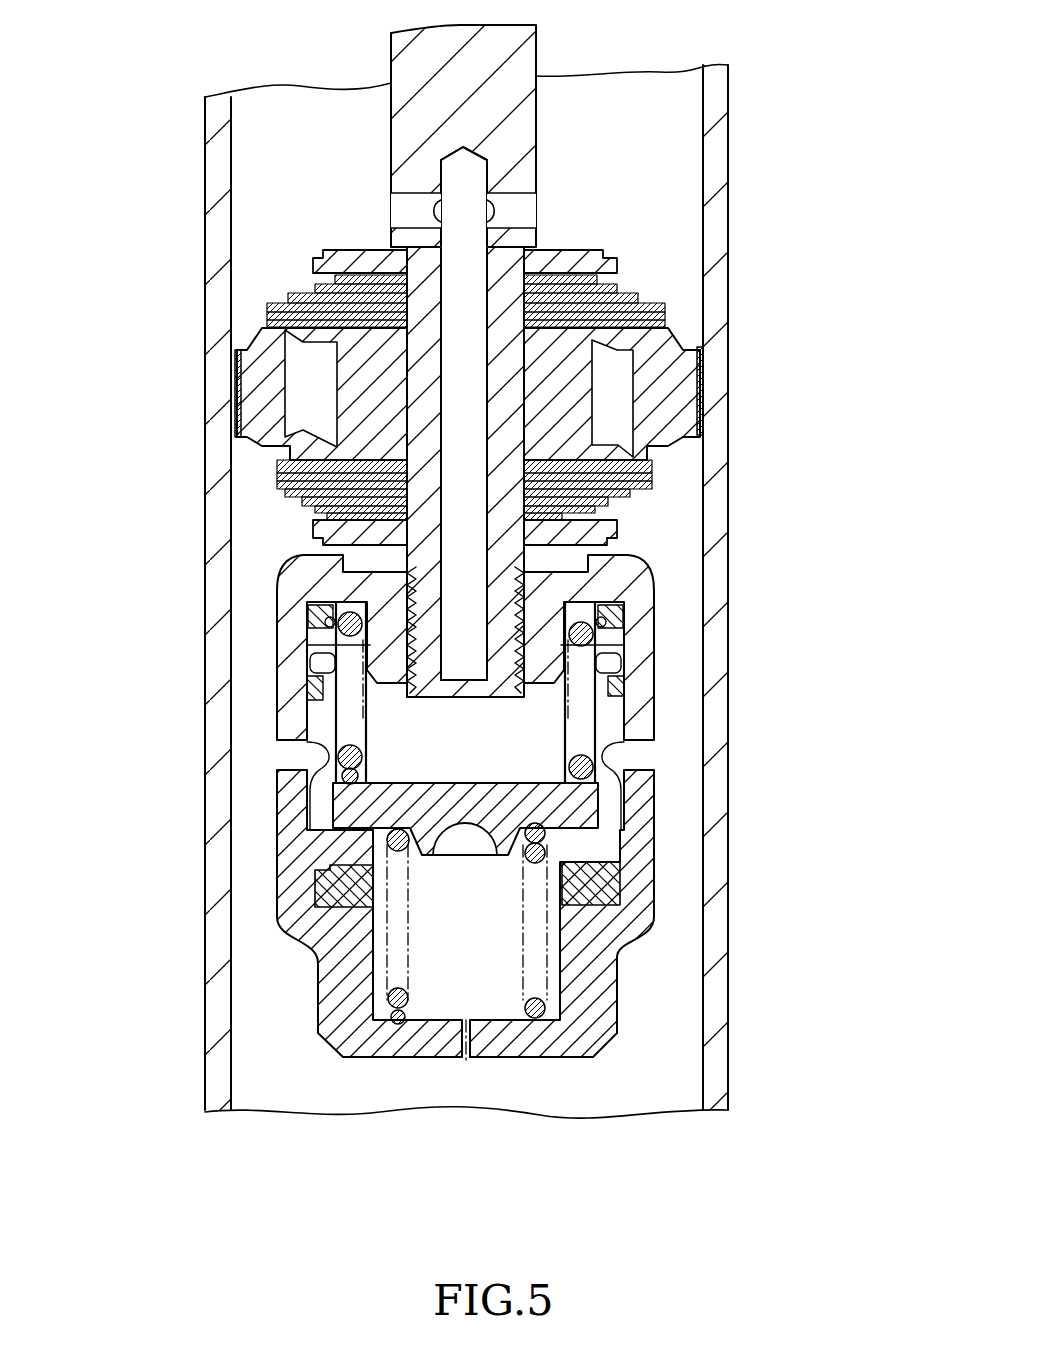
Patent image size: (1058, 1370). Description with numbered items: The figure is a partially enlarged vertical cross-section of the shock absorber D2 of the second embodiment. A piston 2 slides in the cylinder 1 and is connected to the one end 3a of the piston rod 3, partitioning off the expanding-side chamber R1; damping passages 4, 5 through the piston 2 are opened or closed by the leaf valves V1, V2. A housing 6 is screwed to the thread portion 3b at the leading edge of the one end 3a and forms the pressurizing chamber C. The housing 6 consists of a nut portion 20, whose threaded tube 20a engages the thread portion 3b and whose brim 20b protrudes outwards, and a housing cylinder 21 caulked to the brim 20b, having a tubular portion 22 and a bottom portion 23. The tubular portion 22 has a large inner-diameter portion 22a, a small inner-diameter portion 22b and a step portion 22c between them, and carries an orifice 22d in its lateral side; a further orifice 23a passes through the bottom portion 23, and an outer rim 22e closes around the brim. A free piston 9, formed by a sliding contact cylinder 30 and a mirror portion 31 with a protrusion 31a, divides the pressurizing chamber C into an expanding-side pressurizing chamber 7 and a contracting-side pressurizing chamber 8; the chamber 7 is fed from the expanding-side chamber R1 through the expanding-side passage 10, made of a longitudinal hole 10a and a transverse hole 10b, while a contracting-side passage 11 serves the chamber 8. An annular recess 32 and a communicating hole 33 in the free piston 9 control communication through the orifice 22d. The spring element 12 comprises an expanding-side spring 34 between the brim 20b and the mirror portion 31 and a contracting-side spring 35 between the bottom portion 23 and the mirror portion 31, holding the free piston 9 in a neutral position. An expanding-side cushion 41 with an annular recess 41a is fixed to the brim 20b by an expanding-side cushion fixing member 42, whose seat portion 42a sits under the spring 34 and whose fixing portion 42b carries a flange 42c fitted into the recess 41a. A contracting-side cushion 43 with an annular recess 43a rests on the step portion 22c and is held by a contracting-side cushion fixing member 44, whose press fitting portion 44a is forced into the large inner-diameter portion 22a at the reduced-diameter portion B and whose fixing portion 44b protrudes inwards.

The shock absorber D2 is at (200, 88).
The cylinder 1 is at (215, 190).
The piston 2 is at (705, 356).
The piston rod 3 is at (538, 62).
The one end 3a is at (300, 346).
The thread portion 3b is at (560, 545).
The damping passage 4 is at (625, 350).
The damping passage 5 is at (300, 385).
The housing 6 is at (308, 982).
The expanding-side pressurizing chamber 7 is at (305, 745).
The contracting-side pressurizing chamber 8 is at (307, 950).
The free piston 9 is at (655, 710).
The expanding-side passage 10 is at (495, 415).
The longitudinal hole 10a is at (470, 378).
The transverse hole 10b is at (520, 207).
The contracting-side passage 11 is at (436, 1064).
The spring element 12 is at (862, 655).
The nut portion 20 is at (286, 596).
The threaded tube 20a is at (375, 712).
The brim 20b is at (300, 556).
The housing cylinder 21 is at (332, 1060).
The tubular portion 22 is at (628, 836).
The large inner-diameter portion 22a is at (640, 745).
The small inner-diameter portion 22b is at (660, 752).
The step portion 22c is at (600, 902).
The orifice 22d is at (300, 752).
The rim 22e is at (650, 556).
The bottom portion 23 is at (540, 1062).
The orifice 23a is at (466, 1062).
The sliding contact cylinder 30 is at (632, 700).
The mirror portion 31 is at (468, 778).
The protrusion 31a is at (470, 857).
The annular recess 32 is at (300, 780).
The communicating hole 33 is at (303, 808).
The expanding-side spring 34 is at (640, 625).
The contracting-side spring 35 is at (640, 830).
The expanding-side cushion 41 is at (310, 630).
The annular recess 41a is at (370, 652).
The expanding-side cushion fixing member 42 is at (335, 548).
The seat portion 42a is at (620, 590).
The fixing portion 42b is at (640, 600).
The flange 42c is at (620, 615).
The contracting-side cushion 43 is at (620, 854).
The annular recess 43a is at (600, 875).
The contracting-side cushion fixing member 44 is at (372, 832).
The press fitting portion 44a is at (320, 896).
The fixing portion 44b is at (325, 858).
The portion B is at (608, 907).
The pressurizing chamber C is at (85, 753).
The expanding-side chamber R1 is at (680, 135).
The leaf valve V1 is at (660, 492).
The leaf valve V2 is at (660, 292).